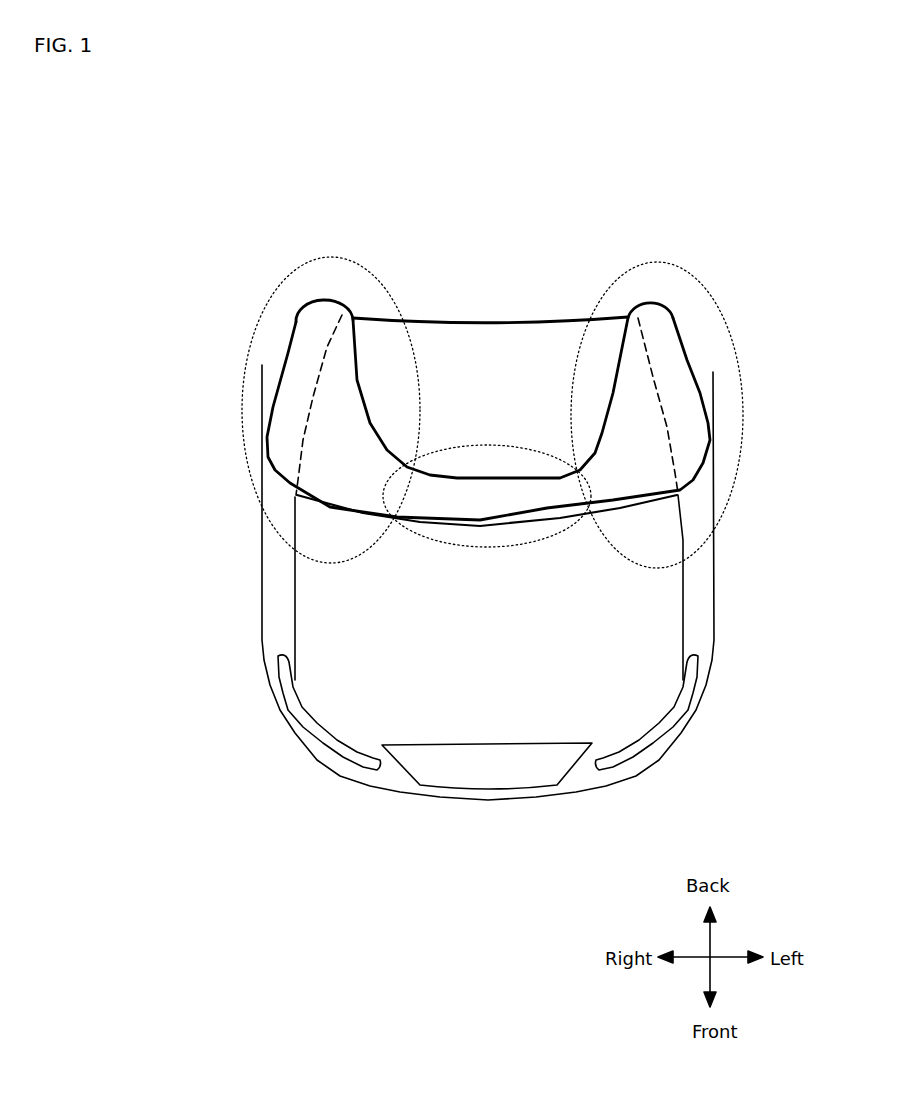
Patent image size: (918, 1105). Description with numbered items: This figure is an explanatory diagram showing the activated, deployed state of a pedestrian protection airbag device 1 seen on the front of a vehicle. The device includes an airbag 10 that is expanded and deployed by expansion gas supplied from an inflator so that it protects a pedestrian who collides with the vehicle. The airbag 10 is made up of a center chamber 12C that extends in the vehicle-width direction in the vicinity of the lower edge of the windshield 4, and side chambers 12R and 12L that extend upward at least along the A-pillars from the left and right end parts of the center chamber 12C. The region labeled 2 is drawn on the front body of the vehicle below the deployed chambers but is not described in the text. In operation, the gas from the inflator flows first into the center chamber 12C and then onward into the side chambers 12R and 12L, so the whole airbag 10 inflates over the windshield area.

The pedestrian protection airbag device 1 is at (657, 262).
The hood 2 is at (643, 588).
The windshield 4 is at (472, 347).
The airbag 10 is at (330, 304).
The side chamber 12R is at (258, 330).
The side chamber 12L is at (720, 330).
The center chamber 12C is at (517, 447).